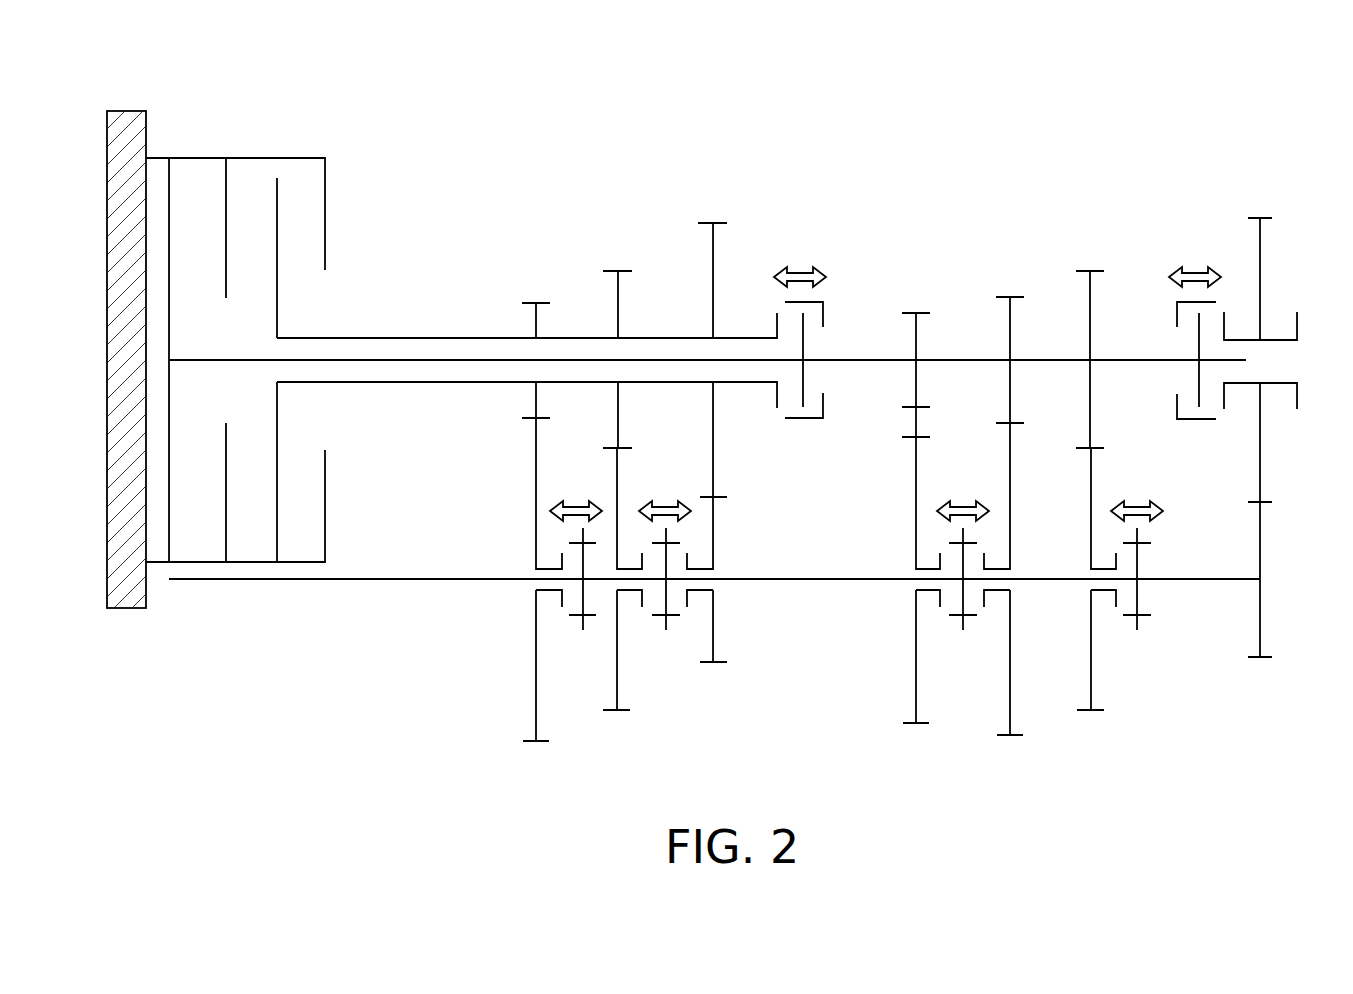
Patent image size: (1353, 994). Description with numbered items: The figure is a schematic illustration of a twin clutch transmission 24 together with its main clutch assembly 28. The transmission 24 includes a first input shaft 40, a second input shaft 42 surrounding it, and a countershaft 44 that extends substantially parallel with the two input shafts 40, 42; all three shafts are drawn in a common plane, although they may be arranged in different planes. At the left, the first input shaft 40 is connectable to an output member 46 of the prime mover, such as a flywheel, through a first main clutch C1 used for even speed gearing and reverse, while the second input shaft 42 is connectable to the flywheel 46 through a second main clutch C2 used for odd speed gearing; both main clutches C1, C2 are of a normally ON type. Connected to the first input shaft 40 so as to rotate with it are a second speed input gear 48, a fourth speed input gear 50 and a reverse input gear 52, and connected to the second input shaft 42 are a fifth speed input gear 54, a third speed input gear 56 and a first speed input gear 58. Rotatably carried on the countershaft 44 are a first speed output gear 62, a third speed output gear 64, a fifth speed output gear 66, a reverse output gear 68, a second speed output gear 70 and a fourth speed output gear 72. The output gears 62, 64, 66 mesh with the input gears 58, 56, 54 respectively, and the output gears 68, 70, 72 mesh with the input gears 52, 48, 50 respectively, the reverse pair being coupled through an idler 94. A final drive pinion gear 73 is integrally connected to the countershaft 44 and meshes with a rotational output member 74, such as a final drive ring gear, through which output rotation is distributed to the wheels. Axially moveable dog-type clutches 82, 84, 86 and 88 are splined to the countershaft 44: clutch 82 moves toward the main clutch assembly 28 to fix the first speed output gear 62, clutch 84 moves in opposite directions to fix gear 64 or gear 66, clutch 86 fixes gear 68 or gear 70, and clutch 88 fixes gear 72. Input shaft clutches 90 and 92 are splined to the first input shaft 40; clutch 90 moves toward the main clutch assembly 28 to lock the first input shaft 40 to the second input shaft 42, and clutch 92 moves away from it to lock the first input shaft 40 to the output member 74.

The transmission 24 is at (1043, 200).
The main clutch assembly 28 is at (260, 158).
The first main clutch C1 is at (170, 542).
The second main clutch C2 is at (277, 542).
The first input shaft 40 is at (415, 360).
The second input shaft 42 is at (363, 338).
The countershaft 44 is at (822, 578).
The output member 46 is at (120, 593).
The 2nd speed input gear 48 is at (1009, 324).
The 4th speed input gear 50 is at (1089, 316).
The reverse input gear 52 is at (915, 336).
The 5th speed input gear 54 is at (712, 259).
The 3rd speed input gear 56 is at (617, 305).
The 1st speed input gear 58 is at (530, 314).
The 1st speed output gear 62 is at (536, 695).
The 3rd speed output gear 64 is at (618, 688).
The 5th speed output gear 66 is at (713, 630).
The reverse output gear 68 is at (916, 658).
The 2nd speed output gear 70 is at (1012, 703).
The 4th speed output gear 72 is at (1092, 673).
The final drive pinion gear 73 is at (1262, 614).
The rotational output member 74 is at (1259, 236).
The axially moveable clutch 82 is at (583, 655).
The axially moveable clutch 84 is at (666, 632).
The axially moveable clutch 86 is at (963, 630).
The axially moveable clutch 88 is at (1137, 632).
The input shaft clutch 90 is at (795, 432).
The input shaft clutch 92 is at (1196, 432).
The idler 94 is at (916, 422).